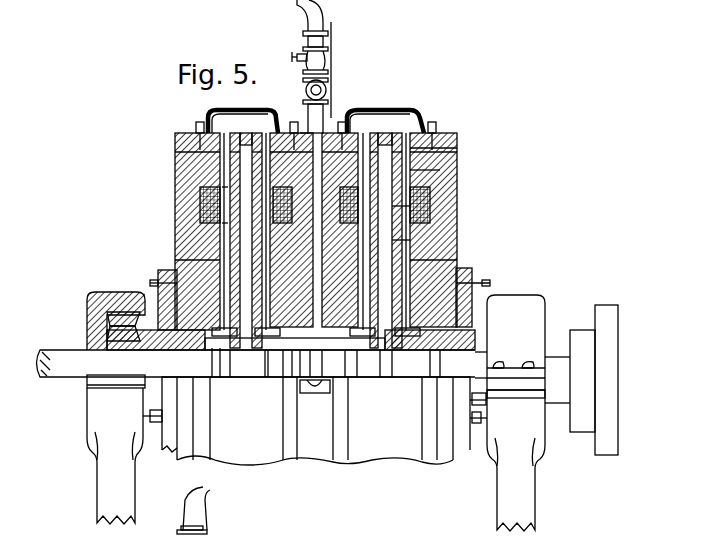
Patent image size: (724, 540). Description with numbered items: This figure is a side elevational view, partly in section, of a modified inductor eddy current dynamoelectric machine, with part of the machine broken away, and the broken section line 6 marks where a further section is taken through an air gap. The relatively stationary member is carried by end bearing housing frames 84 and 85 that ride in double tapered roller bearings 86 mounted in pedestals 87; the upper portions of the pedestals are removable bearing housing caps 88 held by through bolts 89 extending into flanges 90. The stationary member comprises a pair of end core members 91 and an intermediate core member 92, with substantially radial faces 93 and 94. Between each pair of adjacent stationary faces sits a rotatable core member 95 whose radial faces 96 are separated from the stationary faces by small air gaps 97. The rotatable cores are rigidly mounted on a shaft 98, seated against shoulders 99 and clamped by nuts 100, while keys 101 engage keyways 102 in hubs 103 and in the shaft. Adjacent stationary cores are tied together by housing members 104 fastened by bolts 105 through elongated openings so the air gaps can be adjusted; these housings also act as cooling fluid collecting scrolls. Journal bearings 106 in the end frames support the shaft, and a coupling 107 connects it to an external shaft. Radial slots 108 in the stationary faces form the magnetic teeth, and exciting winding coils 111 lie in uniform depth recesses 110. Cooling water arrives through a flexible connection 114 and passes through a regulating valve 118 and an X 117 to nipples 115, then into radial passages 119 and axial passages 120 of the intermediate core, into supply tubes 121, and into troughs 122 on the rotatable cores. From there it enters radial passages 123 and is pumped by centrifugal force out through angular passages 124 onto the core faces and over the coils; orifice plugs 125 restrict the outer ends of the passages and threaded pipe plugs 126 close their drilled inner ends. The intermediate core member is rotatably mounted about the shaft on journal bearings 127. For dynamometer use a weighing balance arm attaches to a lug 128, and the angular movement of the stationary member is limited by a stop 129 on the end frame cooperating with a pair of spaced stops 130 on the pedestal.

The broken section line 6 is at (334, 31).
The end bearing housing frame 84 is at (170, 280).
The end bearing housing frame 85 is at (470, 278).
The antifriction roller bearings 86 is at (107, 325).
The pedestals 87 is at (96, 473).
The bearing housing caps 88 is at (92, 294).
The through bolts 89 is at (528, 364).
The flanges 90 is at (100, 386).
The end core members 91 is at (186, 203).
The intermediate core member 92 is at (360, 114).
The radial faces 93 is at (192, 162).
The radial faces 94 is at (277, 128).
The rotatable core members 95 is at (186, 151).
The radial faces 96 is at (456, 150).
The air gaps 97 is at (376, 134).
The shaft 98 is at (44, 377).
The shoulders 99 is at (269, 356).
The nuts 100 is at (215, 354).
The keys 101 is at (252, 363).
The keyways 102 is at (397, 365).
The hubs 103 is at (357, 352).
The housing members 104 is at (212, 112).
The bolts 105 is at (196, 126).
The bearings 106 is at (190, 349).
The coupling 107 is at (612, 352).
The radial slots 108 is at (398, 240).
The exciting winding recess 110 is at (400, 206).
The exciting winding coils 111 is at (272, 216).
The flexible connection 114 is at (307, 15).
The nipples 115 is at (321, 118).
The X 117 is at (307, 87).
The regulating valve 118 is at (296, 55).
The radially extending cooling fluid passages 119 is at (304, 132).
The axially extending cooling fluid passages 120 is at (300, 360).
The cooling fluid supply tubes 121 is at (297, 363).
The cooling fluid troughs 122 is at (355, 350).
The radial passages 123 is at (440, 170).
The angularly outwardly extending passages 124 is at (250, 198).
The plugs 125 is at (246, 134).
The threaded pipe plugs 126 is at (319, 366).
The journal bearings 127 is at (291, 367).
The lug 128 is at (318, 393).
The stop 129 is at (472, 398).
The stops 130 is at (483, 402).